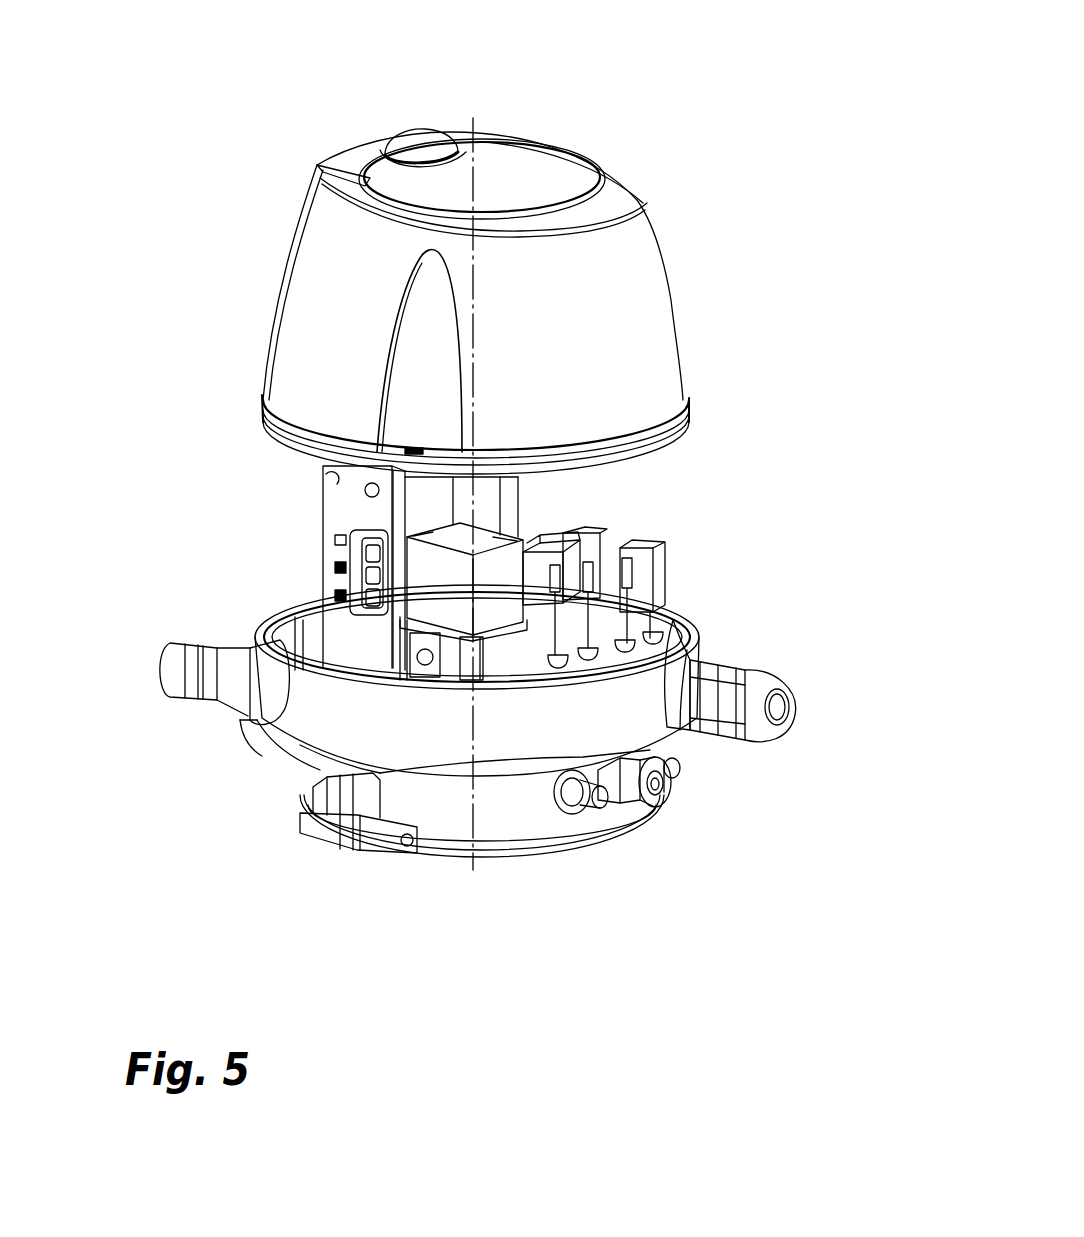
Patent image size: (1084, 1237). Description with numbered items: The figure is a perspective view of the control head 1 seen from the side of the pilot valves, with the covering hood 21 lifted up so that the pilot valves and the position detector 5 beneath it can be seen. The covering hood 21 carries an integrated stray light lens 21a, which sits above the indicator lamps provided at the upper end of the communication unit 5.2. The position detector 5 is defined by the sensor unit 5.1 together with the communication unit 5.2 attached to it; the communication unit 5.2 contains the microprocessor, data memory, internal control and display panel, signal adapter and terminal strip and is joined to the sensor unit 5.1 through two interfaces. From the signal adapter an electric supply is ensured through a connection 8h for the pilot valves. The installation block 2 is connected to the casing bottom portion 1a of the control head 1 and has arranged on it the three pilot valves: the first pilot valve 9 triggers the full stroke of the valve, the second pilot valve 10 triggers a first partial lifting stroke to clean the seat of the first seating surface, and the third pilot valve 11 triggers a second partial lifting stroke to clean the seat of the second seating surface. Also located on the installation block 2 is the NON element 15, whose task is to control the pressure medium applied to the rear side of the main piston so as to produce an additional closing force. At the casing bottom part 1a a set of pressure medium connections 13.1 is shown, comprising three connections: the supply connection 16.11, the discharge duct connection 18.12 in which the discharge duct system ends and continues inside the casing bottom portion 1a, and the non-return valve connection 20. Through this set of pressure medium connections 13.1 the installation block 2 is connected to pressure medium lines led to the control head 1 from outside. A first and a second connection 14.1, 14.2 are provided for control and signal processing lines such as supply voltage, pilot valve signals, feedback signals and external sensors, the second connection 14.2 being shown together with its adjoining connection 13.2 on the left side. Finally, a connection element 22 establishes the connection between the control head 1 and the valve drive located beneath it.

The covering hood 21 is at (317, 390).
The stray light lens 21a is at (413, 145).
The position detector 5 is at (266, 468).
The sensor unit 5.1 is at (343, 523).
The communication unit 5.2 is at (487, 507).
The connection for the pilot valves 8h is at (343, 573).
The NON element 15 is at (458, 582).
The first pilot valve 9 is at (623, 543).
The second pilot valve 10 is at (607, 580).
The third pilot valve 11 is at (643, 593).
The casing bottom portion 1a is at (350, 708).
The control head 1 is at (270, 795).
The installation block 2 is at (300, 820).
The connection element 22 is at (377, 832).
The second connection for control and signal processing lines 14.2 is at (248, 697).
The cable connection 13.2 is at (232, 730).
The first connection for control and signal processing lines 14.1 is at (683, 680).
The set of pressure medium connections 13.1 is at (710, 795).
The discharge duct connection 18.12 is at (600, 800).
The non-return valve connection 20 is at (627, 783).
The supply connection 16.11 is at (675, 780).